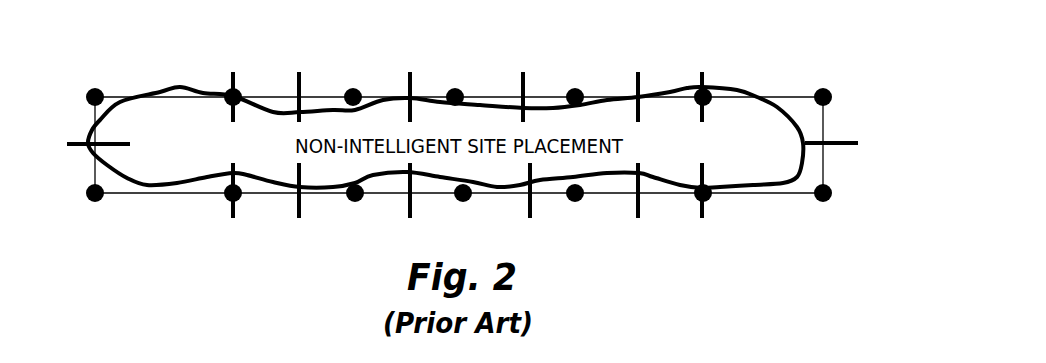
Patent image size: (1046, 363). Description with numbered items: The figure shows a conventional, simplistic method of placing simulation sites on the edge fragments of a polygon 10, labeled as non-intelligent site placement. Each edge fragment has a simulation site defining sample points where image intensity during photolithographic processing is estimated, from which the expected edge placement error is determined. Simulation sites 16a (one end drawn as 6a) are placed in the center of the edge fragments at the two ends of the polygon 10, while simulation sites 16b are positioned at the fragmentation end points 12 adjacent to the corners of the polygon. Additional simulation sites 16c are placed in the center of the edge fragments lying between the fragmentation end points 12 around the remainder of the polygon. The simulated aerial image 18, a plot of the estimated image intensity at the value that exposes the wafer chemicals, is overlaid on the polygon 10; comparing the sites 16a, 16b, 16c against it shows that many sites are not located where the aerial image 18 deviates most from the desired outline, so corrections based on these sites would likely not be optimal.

The polygon 10 is at (788, 92).
The fragmentation end points 12 is at (460, 90).
The crossbar 6a is at (77, 147).
The simulation sites 16a is at (843, 137).
The simulation sites 16b is at (236, 82).
The additional simulation sites 16c is at (301, 92).
The simulated aerial image 18 is at (747, 185).